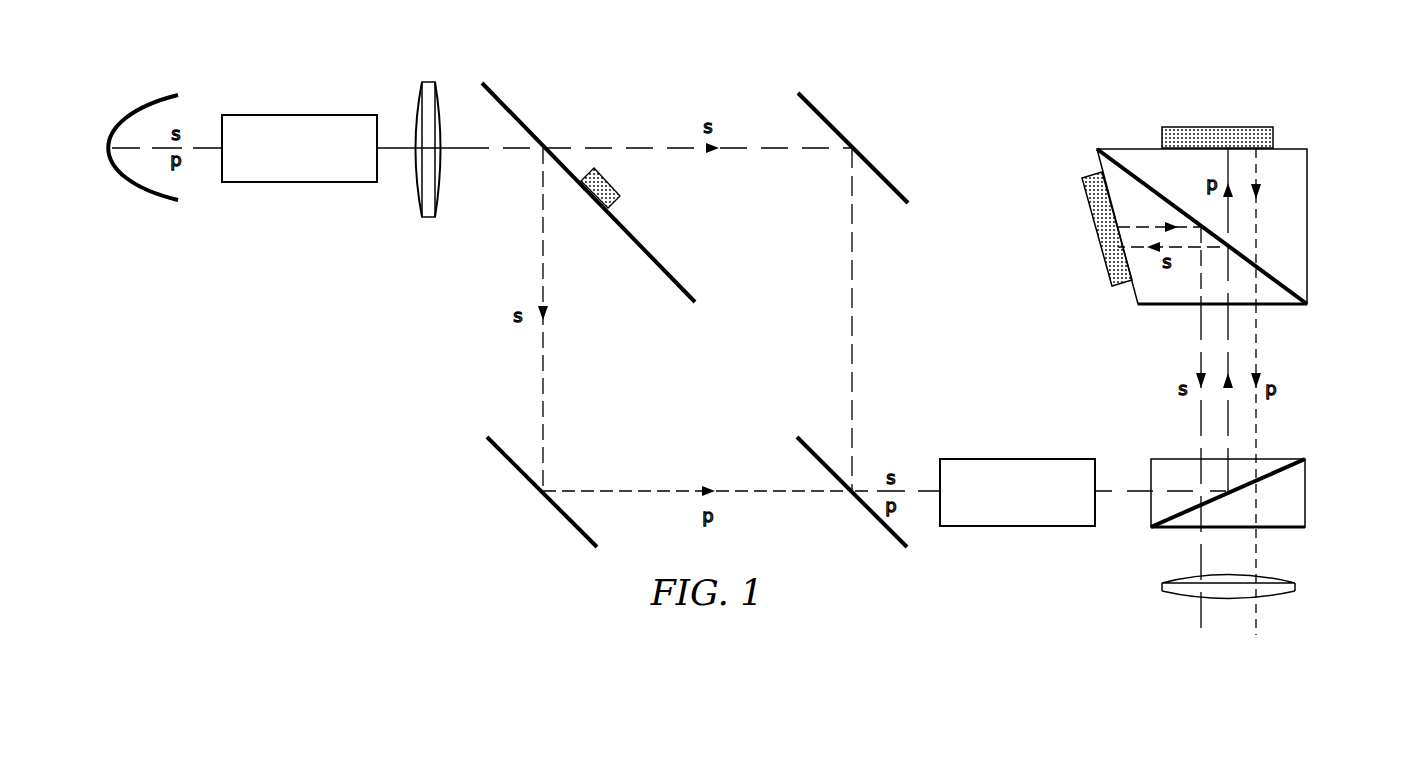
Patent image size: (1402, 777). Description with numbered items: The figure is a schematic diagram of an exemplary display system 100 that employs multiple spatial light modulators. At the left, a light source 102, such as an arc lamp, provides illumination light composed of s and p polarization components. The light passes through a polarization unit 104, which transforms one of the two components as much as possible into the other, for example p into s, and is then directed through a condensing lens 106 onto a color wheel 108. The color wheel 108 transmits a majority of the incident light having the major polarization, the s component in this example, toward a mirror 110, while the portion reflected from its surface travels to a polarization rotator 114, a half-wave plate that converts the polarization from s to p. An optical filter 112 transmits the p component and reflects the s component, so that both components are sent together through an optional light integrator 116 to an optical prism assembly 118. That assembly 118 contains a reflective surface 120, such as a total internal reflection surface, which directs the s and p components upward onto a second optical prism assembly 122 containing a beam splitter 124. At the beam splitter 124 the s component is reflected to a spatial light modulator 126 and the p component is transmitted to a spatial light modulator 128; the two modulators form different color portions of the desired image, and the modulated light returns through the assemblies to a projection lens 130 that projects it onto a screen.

The display system 100 is at (1032, 56).
The light source reflector 102 is at (152, 102).
The polarization unit 104 is at (300, 115).
The condensing lens 106 is at (428, 82).
The color wheel 108 is at (518, 117).
The mirror 110 is at (820, 115).
The optical filter 112 is at (872, 520).
The polarization rotator 114 is at (565, 520).
The light integrator 116 is at (1025, 527).
The optical prism assembly 118 is at (1307, 500).
The reflective surface 120 is at (1272, 465).
The optical prism assembly 122 is at (1312, 211).
The beam splitter 124 is at (1280, 280).
The spatial light modulator 126 is at (1102, 262).
The spatial light modulator 128 is at (1233, 127).
The projection lens 130 is at (1294, 590).